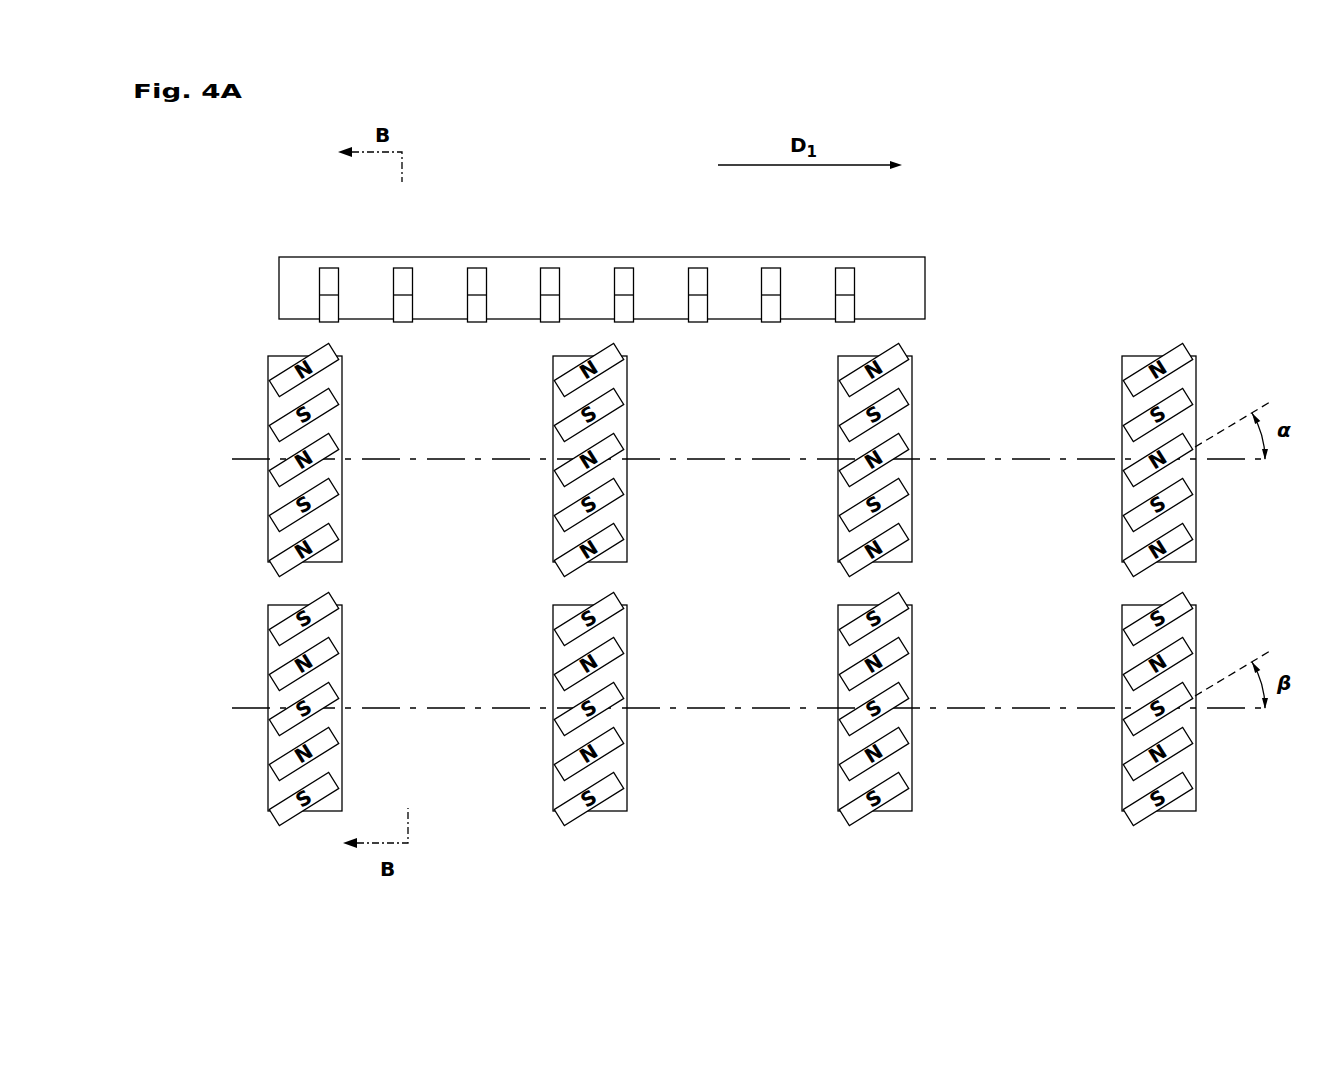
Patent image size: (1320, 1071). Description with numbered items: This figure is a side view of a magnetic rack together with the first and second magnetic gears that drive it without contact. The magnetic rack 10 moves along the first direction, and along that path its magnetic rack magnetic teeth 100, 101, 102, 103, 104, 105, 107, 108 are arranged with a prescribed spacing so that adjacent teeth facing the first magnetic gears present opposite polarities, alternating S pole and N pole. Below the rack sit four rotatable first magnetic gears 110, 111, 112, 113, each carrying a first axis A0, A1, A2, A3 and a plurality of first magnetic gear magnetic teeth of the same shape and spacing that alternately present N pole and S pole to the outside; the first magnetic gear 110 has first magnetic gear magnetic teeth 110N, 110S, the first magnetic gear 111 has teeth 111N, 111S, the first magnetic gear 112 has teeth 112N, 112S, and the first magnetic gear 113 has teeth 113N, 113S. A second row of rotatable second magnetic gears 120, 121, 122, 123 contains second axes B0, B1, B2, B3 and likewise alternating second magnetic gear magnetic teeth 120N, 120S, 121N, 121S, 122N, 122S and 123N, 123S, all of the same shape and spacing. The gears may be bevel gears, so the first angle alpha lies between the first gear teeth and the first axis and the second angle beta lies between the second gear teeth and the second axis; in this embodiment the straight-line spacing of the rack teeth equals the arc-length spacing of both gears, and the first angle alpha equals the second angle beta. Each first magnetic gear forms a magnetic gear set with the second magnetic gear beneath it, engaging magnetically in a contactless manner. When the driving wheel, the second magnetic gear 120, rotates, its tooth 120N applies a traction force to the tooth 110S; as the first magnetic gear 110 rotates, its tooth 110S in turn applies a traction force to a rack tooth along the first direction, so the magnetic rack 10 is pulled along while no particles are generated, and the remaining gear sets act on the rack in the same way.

The magnetic rack 10 is at (907, 284).
The magnetic rack magnetic tooth 100 is at (329, 268).
The magnetic rack magnetic tooth 101 is at (403, 268).
The magnetic rack magnetic tooth 102 is at (477, 268).
The magnetic rack magnetic tooth 103 is at (550, 268).
The magnetic rack magnetic tooth 104 is at (624, 268).
The magnetic rack magnetic tooth 105 is at (698, 268).
The magnetic rack magnetic tooth 107 is at (771, 268).
The magnetic rack magnetic tooth 108 is at (845, 268).
The first magnetic gear 110 is at (259, 467).
The first magnetic gear 111 is at (544, 467).
The first magnetic gear 112 is at (829, 467).
The first magnetic gear 113 is at (1113, 467).
The first magnetic gear magnetic tooth 110S is at (278, 520).
The first magnetic gear magnetic tooth 111S is at (563, 520).
The first magnetic gear magnetic tooth 112S is at (848, 520).
The first magnetic gear magnetic tooth 113S is at (1132, 520).
The first magnetic gear magnetic tooth 110N is at (277, 578).
The first magnetic gear magnetic tooth 111N is at (562, 578).
The first magnetic gear magnetic tooth 112N is at (847, 578).
The first magnetic gear magnetic tooth 113N is at (1131, 578).
The second magnetic gear 120 is at (259, 716).
The second magnetic gear 121 is at (544, 716).
The second magnetic gear 122 is at (829, 716).
The second magnetic gear 123 is at (1113, 716).
The second magnetic gear magnetic tooth 120S is at (278, 769).
The second magnetic gear magnetic tooth 121S is at (563, 769).
The second magnetic gear magnetic tooth 122S is at (848, 769).
The second magnetic gear magnetic tooth 123S is at (1132, 769).
The second magnetic gear magnetic tooth 120N is at (277, 827).
The second magnetic gear magnetic tooth 121N is at (562, 827).
The second magnetic gear magnetic tooth 122N is at (847, 827).
The second magnetic gear magnetic tooth 123N is at (1131, 827).
The first axis A0 is at (262, 460).
The first axis A1 is at (547, 460).
The first axis A2 is at (832, 460).
The first axis A3 is at (1116, 460).
The second axis B0 is at (262, 709).
The second axis B1 is at (547, 709).
The second axis B2 is at (832, 709).
The second axis B3 is at (1116, 709).